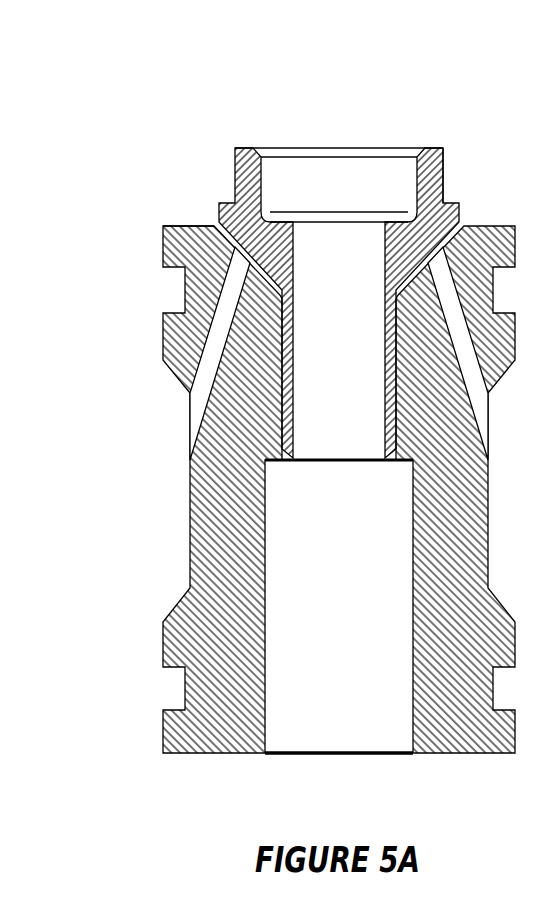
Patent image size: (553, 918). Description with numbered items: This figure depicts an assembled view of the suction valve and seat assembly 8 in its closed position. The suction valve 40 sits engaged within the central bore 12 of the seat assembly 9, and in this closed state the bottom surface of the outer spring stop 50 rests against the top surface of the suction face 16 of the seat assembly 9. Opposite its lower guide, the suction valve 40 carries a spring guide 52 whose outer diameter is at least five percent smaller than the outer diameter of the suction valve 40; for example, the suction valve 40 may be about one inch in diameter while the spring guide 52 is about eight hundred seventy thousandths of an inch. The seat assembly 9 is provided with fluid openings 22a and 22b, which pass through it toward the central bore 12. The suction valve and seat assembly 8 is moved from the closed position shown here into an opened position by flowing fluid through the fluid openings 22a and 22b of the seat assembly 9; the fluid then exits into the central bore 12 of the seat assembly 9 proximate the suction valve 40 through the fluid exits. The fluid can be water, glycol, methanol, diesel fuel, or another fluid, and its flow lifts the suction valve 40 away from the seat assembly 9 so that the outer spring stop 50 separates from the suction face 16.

The suction valve and seat assembly 8 is at (318, 431).
The seat assembly 9 is at (332, 490).
The central bore 12 is at (339, 757).
The suction face 16 is at (185, 224).
The fluid opening 22a is at (192, 421).
The fluid opening 22b is at (484, 421).
The suction valve 40 is at (226, 170).
The outer spring stop 50 is at (336, 297).
The spring guide 52 is at (444, 172).